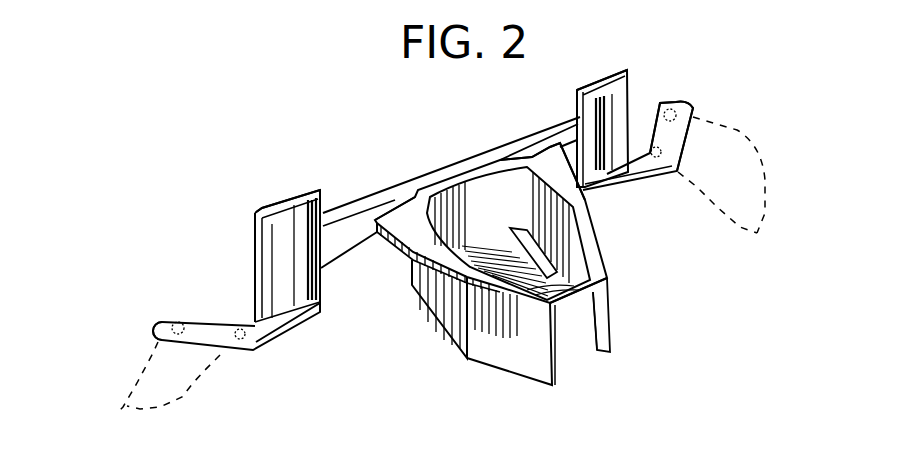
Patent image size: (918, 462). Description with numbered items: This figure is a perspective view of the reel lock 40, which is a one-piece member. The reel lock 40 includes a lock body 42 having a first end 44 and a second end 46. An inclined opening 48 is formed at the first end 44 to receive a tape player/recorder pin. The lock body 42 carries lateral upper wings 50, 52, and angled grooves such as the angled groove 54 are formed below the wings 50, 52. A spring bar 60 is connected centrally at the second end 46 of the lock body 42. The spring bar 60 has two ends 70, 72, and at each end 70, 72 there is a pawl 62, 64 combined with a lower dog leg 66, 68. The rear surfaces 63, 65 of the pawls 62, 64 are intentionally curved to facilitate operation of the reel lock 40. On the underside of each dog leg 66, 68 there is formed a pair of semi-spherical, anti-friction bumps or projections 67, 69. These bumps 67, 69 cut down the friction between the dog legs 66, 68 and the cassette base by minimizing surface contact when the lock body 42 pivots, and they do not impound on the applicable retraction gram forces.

The reel lock 40 is at (242, 150).
The lock body 42 is at (558, 232).
The first end 44 is at (557, 312).
The second end 46 is at (443, 170).
The inclined opening 48 is at (580, 313).
The lateral upper wing 50 is at (397, 247).
The lateral upper wing 52 is at (552, 167).
The angled groove 54 is at (427, 323).
The spring bar 60 is at (377, 192).
The pawl 62 is at (278, 247).
The rear surface of pawl 63 is at (278, 190).
The pawl 64 is at (620, 103).
The rear surface of pawl 65 is at (578, 88).
The lower dog leg 66 is at (200, 330).
The anti-friction bumps 67 is at (149, 385).
The lower dog leg 68 is at (677, 133).
The anti-friction bumps 69 is at (736, 185).
The end of spring bar 70 is at (157, 325).
The end of spring bar 72 is at (670, 103).